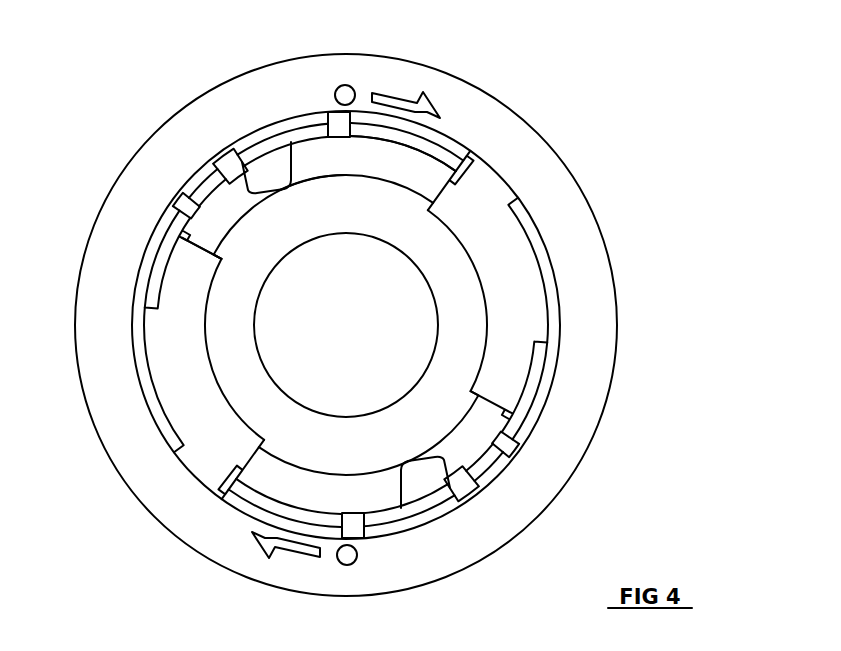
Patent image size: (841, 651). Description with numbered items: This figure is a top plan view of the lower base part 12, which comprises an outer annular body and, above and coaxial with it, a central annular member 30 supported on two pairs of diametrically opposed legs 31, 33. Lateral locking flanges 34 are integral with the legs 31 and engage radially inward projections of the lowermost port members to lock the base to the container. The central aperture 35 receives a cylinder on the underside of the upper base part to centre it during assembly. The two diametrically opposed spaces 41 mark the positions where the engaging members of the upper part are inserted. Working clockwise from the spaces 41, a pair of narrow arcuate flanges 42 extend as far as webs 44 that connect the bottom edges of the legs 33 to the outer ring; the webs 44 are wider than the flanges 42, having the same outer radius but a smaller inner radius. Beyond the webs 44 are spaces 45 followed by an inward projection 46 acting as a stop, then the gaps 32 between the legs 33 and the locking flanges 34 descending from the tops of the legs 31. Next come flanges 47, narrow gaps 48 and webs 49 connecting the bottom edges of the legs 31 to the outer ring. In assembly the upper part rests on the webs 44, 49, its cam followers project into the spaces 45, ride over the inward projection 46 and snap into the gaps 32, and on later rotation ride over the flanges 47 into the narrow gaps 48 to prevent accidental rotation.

The lower base part 12 is at (567, 190).
The hub 30 is at (425, 243).
The legs 31 is at (417, 173).
The gaps 32 is at (247, 147).
The legs 33 is at (213, 230).
The locking flanges 34 is at (343, 160).
The central aperture 35 is at (395, 300).
The spaces 41 is at (493, 185).
The narrow arcuate flanges 42 is at (145, 385).
The webs 44 is at (157, 270).
The spaces 45 is at (205, 187).
The inward projection 46 is at (213, 157).
The flanges 47 is at (285, 132).
The narrow gaps 48 is at (364, 116).
The webs 49 is at (413, 150).